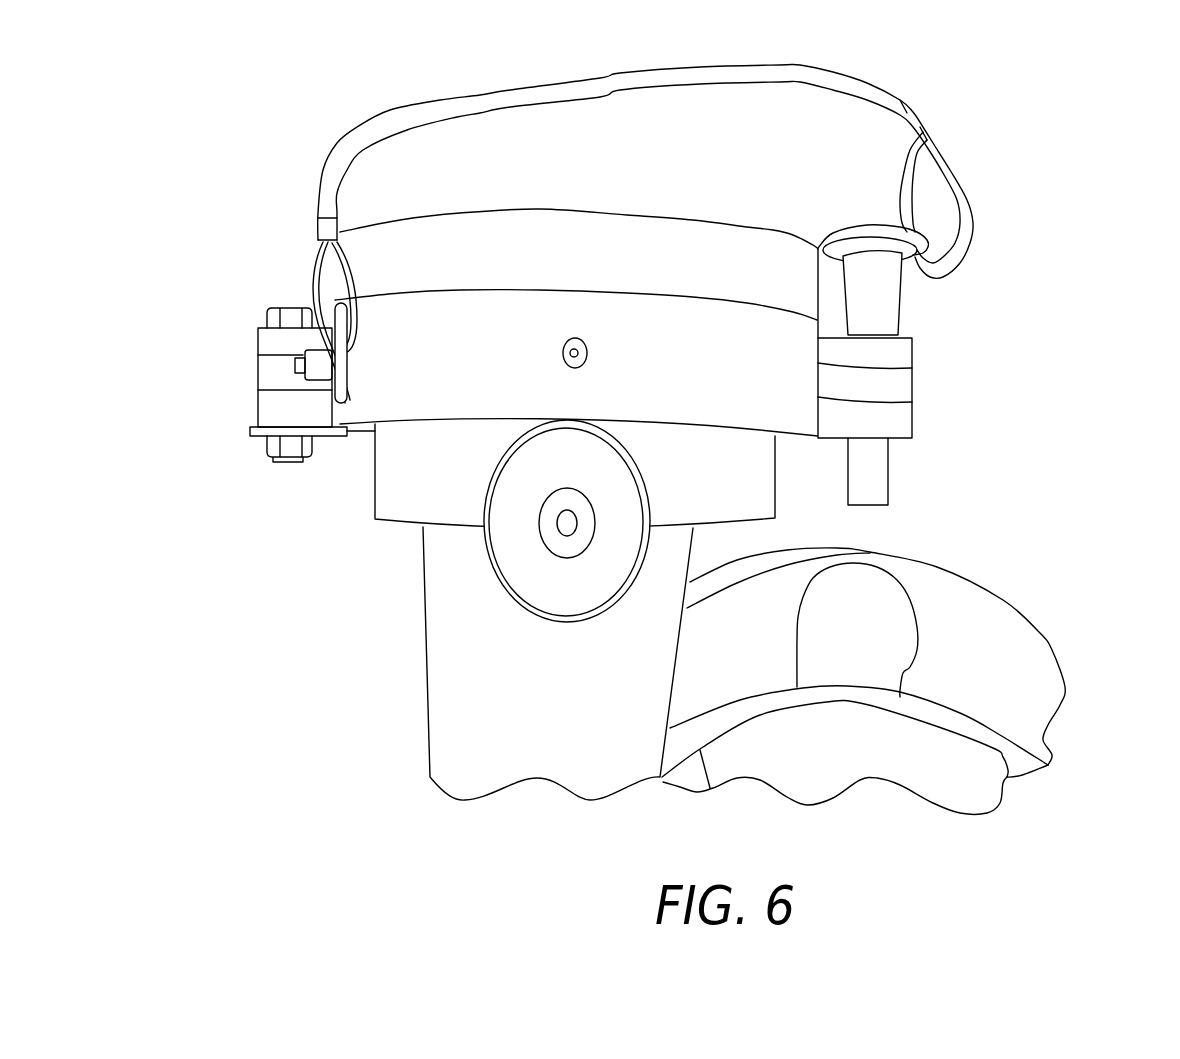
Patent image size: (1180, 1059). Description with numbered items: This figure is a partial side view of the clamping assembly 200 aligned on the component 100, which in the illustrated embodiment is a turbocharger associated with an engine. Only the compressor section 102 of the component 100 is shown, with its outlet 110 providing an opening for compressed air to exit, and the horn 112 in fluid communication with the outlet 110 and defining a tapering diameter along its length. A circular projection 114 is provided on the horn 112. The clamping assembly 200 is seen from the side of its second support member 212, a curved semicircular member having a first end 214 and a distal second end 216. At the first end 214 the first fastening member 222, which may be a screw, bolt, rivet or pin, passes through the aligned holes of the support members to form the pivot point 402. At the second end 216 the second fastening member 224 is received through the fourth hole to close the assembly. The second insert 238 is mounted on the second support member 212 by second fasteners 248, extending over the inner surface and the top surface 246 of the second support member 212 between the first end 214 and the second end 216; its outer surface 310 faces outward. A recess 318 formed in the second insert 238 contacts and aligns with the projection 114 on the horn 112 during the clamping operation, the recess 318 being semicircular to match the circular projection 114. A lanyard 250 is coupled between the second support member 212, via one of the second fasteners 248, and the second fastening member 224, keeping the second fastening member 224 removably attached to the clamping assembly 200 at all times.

The component 100 is at (1040, 633).
The compressor section 102 is at (913, 674).
The outlet 110 is at (576, 281).
The horn 112 is at (528, 695).
The projection 114 is at (547, 591).
The clamping assembly 200 is at (934, 377).
The second support member 212 is at (430, 364).
The first end 214 is at (344, 470).
The second end 216 is at (826, 468).
The first fastening member 222 is at (267, 313).
The second fastening member 224 is at (890, 304).
The second insert 238 is at (428, 265).
The top surface 246 is at (507, 290).
The second fasteners 248 is at (295, 362).
The lanyard 250 is at (833, 72).
The outer surface 310 is at (743, 238).
The recess 318 is at (475, 468).
The pivot point 402 is at (261, 322).